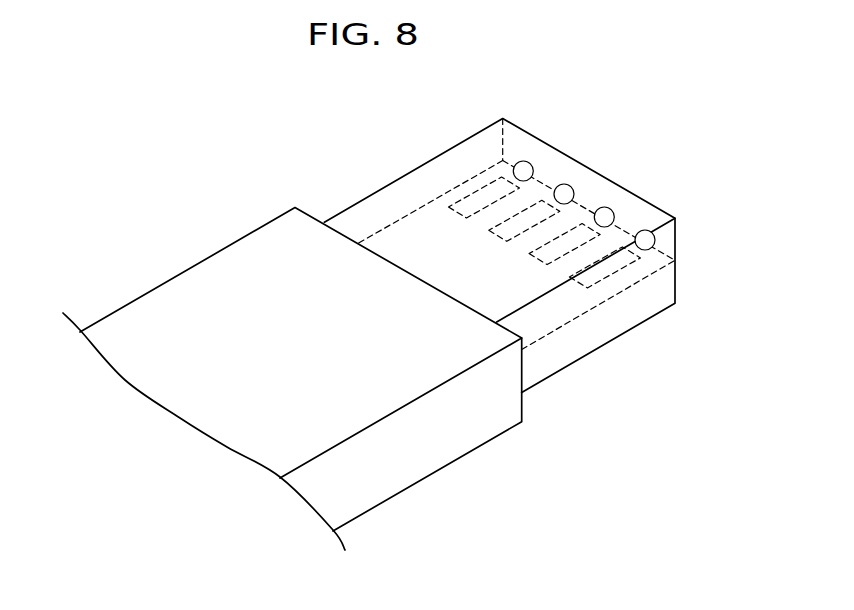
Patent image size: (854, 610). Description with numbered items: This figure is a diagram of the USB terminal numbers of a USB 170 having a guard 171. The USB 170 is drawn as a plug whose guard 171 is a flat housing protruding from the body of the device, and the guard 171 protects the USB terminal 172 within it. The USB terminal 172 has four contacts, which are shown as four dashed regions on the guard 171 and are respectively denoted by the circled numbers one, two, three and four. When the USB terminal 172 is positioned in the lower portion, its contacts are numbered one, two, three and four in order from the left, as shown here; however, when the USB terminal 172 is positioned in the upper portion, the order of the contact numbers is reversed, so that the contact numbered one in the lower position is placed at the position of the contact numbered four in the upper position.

The USB 170 is at (213, 195).
The guard 171 is at (423, 167).
The USB terminal 172 is at (613, 273).